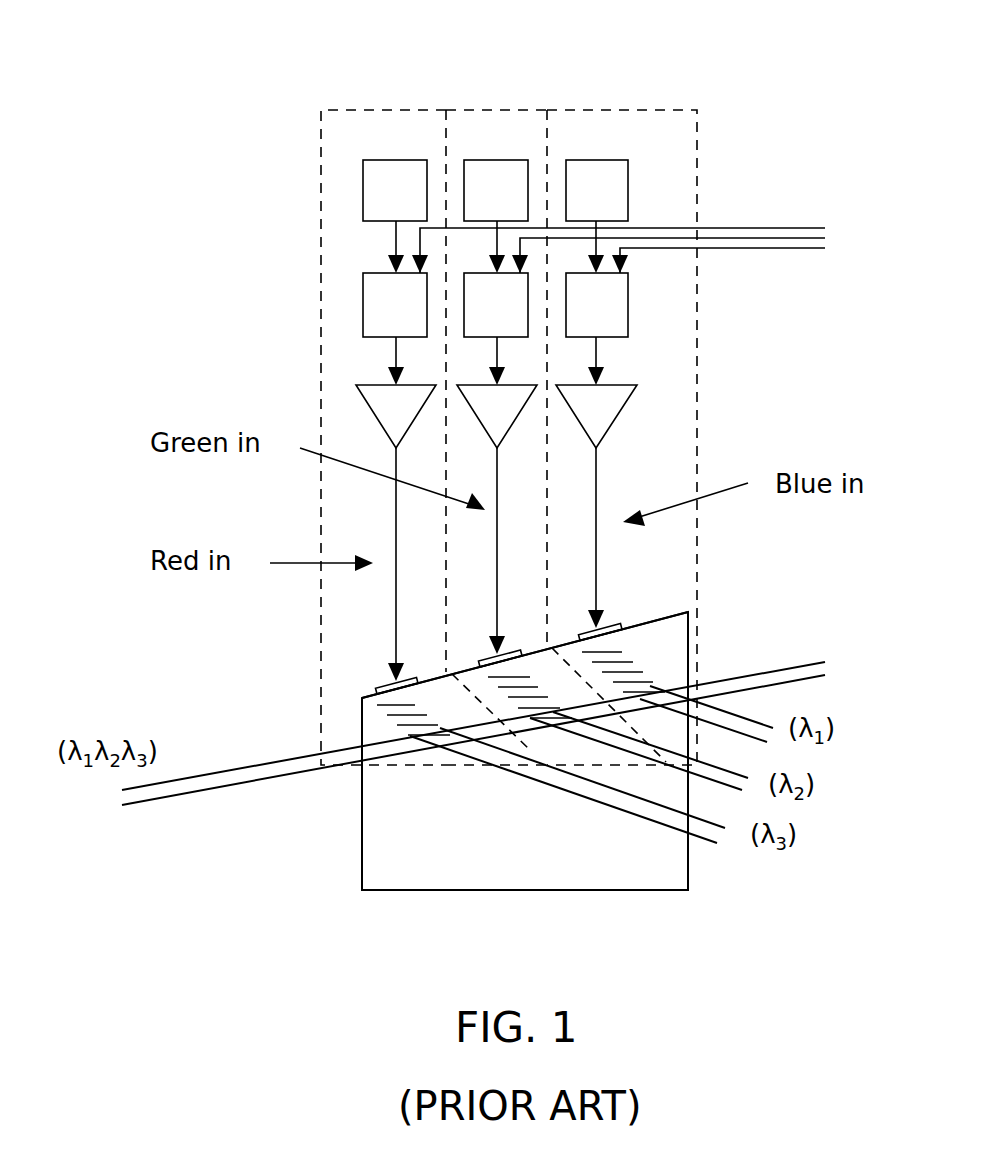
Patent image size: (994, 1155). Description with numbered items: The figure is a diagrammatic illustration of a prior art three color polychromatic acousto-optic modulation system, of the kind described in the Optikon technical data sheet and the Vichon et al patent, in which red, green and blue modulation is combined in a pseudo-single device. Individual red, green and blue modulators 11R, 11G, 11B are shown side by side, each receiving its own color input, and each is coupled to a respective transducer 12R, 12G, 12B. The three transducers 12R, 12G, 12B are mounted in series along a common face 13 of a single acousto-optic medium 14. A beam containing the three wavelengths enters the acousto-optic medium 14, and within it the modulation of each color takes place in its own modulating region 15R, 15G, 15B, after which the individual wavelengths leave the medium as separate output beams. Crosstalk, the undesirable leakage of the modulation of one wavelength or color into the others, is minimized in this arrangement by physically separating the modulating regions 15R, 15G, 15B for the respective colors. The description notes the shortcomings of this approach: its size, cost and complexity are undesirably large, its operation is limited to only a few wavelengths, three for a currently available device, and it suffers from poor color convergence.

The red modulator 11R is at (335, 177).
The green modulator 11G is at (502, 123).
The blue modulator 11B is at (683, 170).
The transducer 12R is at (385, 680).
The transducer 12G is at (487, 653).
The transducer 12B is at (583, 630).
The common face 13 is at (660, 613).
The acousto-optic medium 14 is at (385, 823).
The modulating region 15R is at (417, 738).
The modulating region 15G is at (535, 722).
The modulating region 15B is at (661, 698).